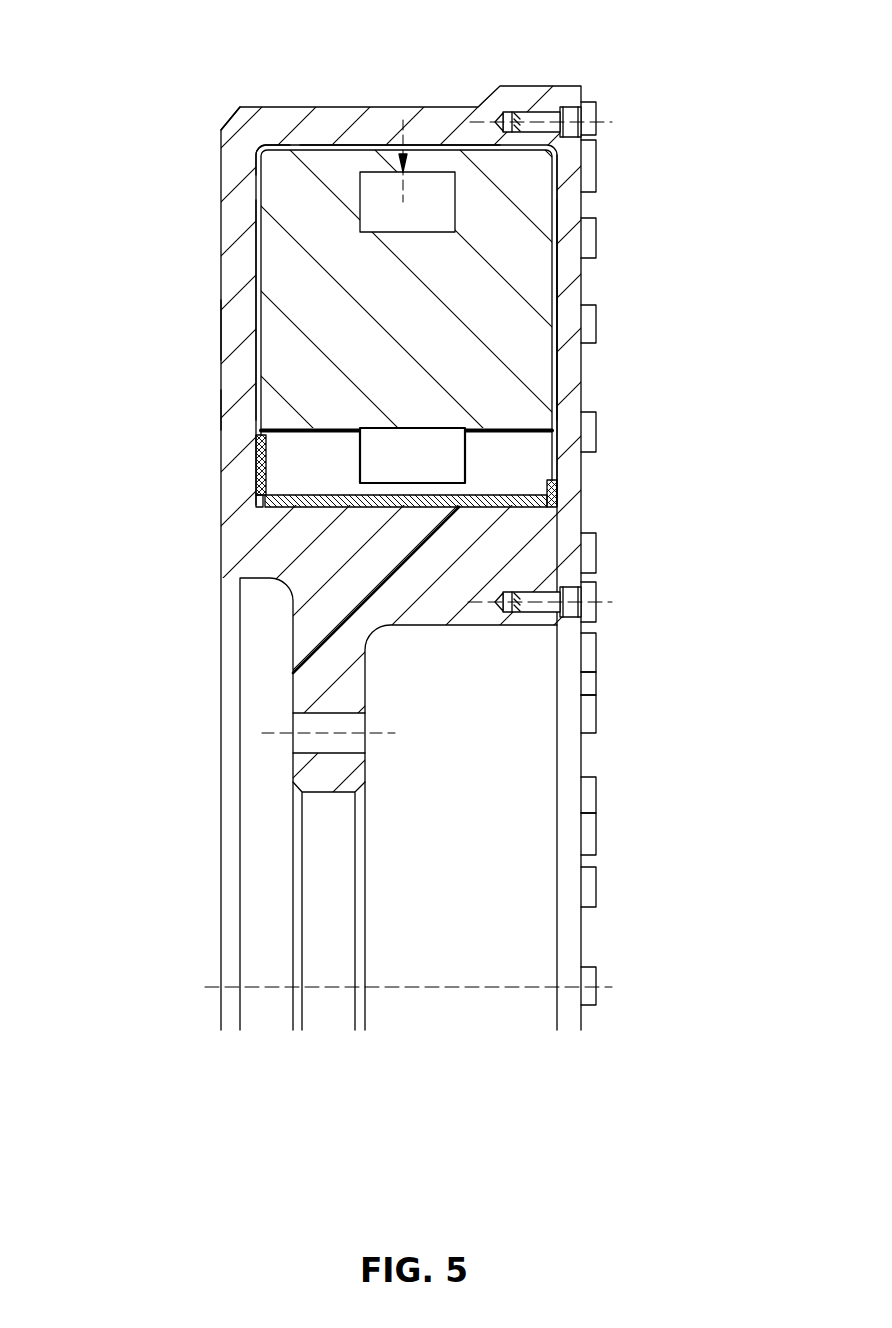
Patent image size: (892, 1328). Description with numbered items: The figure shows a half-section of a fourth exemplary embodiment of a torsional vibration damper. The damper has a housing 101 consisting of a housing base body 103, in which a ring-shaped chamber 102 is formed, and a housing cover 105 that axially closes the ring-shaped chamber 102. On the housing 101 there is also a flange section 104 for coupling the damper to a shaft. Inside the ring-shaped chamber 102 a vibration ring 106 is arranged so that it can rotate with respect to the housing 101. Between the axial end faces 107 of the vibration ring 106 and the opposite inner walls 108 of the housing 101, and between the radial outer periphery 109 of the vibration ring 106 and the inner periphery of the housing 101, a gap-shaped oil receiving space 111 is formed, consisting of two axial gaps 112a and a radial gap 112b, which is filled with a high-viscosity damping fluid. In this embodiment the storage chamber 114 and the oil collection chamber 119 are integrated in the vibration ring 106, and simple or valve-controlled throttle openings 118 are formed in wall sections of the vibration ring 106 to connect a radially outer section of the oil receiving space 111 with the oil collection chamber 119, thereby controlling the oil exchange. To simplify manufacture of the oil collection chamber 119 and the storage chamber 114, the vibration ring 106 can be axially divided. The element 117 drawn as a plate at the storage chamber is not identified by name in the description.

The housing 101 is at (222, 128).
The ring-shaped chamber 102 is at (258, 217).
The housing base body 103 is at (231, 131).
The flange section 104 is at (307, 682).
The housing cover 105 is at (570, 97).
The vibration ring 106 is at (290, 273).
The axial end faces 107 is at (257, 305).
The inner walls 108 is at (252, 330).
The radial outer periphery 109 is at (283, 147).
The oil receiving space 111 is at (257, 407).
The axial gaps 112a is at (253, 367).
The radial gap 112b is at (330, 147).
The storage chamber 114 is at (450, 453).
The plate 117 is at (500, 433).
The throttle openings 118 is at (403, 152).
The oil collection chamber 119 is at (422, 195).